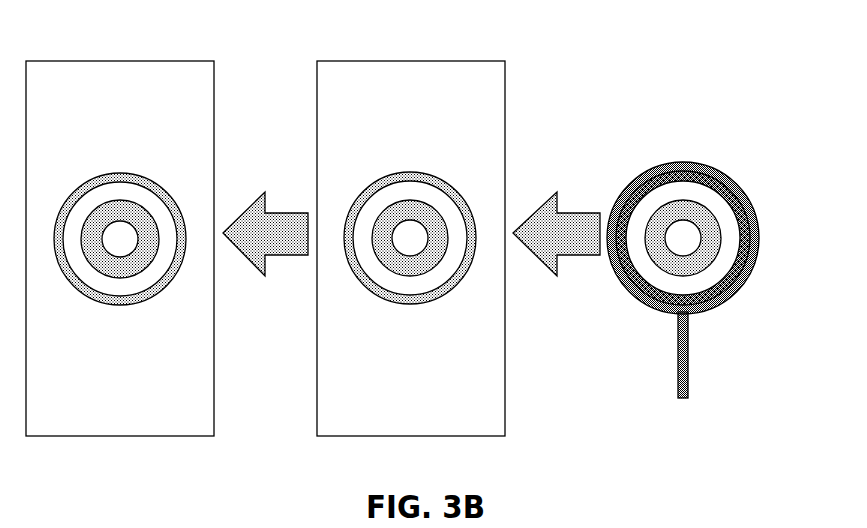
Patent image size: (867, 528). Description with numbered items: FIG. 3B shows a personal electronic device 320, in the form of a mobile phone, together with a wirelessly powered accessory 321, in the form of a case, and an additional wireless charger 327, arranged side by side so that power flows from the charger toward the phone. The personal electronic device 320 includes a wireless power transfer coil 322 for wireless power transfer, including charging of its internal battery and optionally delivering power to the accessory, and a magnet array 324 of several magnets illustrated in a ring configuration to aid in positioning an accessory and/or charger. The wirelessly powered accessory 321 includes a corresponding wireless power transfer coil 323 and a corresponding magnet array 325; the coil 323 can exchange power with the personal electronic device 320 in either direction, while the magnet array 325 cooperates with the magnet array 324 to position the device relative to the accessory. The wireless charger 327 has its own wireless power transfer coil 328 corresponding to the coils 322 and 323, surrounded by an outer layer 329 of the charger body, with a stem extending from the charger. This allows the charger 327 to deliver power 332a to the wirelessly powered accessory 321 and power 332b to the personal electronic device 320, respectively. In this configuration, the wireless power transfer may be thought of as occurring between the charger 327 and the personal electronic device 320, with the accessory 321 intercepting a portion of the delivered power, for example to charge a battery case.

The personal electronic device 320 is at (186, 61).
The wirelessly powered accessory 321 is at (477, 61).
The wireless power transfer coil 322 is at (120, 275).
The wireless power transfer coil 323 is at (418, 200).
The magnet array 324 is at (110, 173).
The magnet array 325 is at (410, 307).
The wireless charger 327 is at (658, 310).
The wireless power transfer coil 328 is at (708, 213).
The outer layer of tissue sample 329 is at (722, 295).
The power delivered to accessory 332a is at (588, 212).
The power delivered to personal electronic device 332b is at (298, 213).